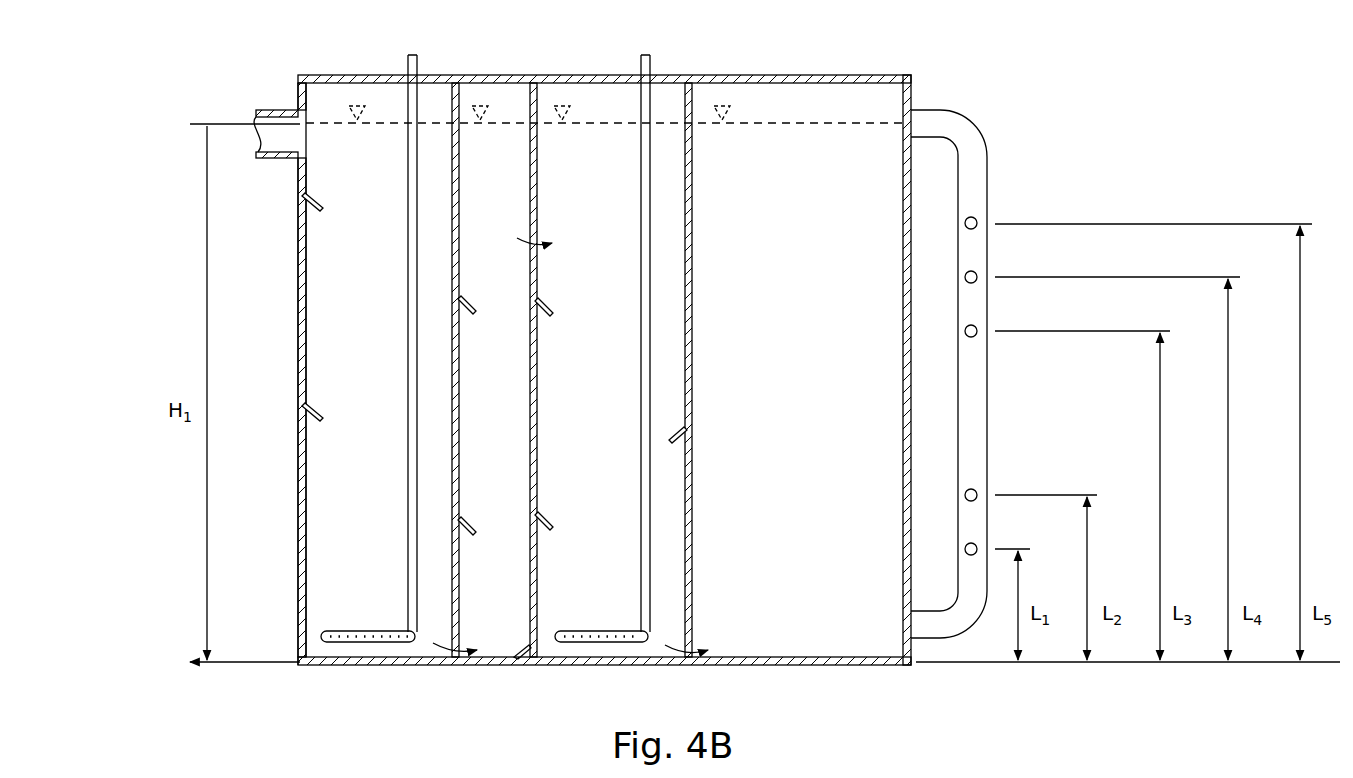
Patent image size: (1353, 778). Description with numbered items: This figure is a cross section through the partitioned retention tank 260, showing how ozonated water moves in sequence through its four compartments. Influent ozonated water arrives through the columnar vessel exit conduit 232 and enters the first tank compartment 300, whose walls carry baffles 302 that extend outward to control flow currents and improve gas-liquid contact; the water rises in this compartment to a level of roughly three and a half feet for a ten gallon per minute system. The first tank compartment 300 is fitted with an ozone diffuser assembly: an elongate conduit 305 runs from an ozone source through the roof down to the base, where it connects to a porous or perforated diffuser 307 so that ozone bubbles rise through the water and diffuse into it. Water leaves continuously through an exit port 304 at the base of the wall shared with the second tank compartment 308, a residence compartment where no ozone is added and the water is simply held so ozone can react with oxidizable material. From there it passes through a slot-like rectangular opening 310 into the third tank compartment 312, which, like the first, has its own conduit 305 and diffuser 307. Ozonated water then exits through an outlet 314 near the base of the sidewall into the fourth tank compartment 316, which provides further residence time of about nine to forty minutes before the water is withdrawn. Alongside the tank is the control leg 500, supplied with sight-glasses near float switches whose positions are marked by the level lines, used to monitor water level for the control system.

The columnar vessel exit conduit 232 is at (272, 108).
The partitioned retention tank 260 is at (838, 75).
The first tank compartment 300 is at (325, 102).
The baffles 302 is at (316, 195).
The exit port 304 is at (466, 636).
The elongate conduit 305 is at (408, 312).
The diffuser 307 is at (370, 630).
The second tank compartment 308 is at (503, 100).
The slot-like rectangular opening 310 is at (547, 230).
The third tank compartment 312 is at (590, 100).
The outlet 314 is at (697, 636).
The fourth tank compartment 316 is at (785, 97).
The control leg 500 is at (988, 156).